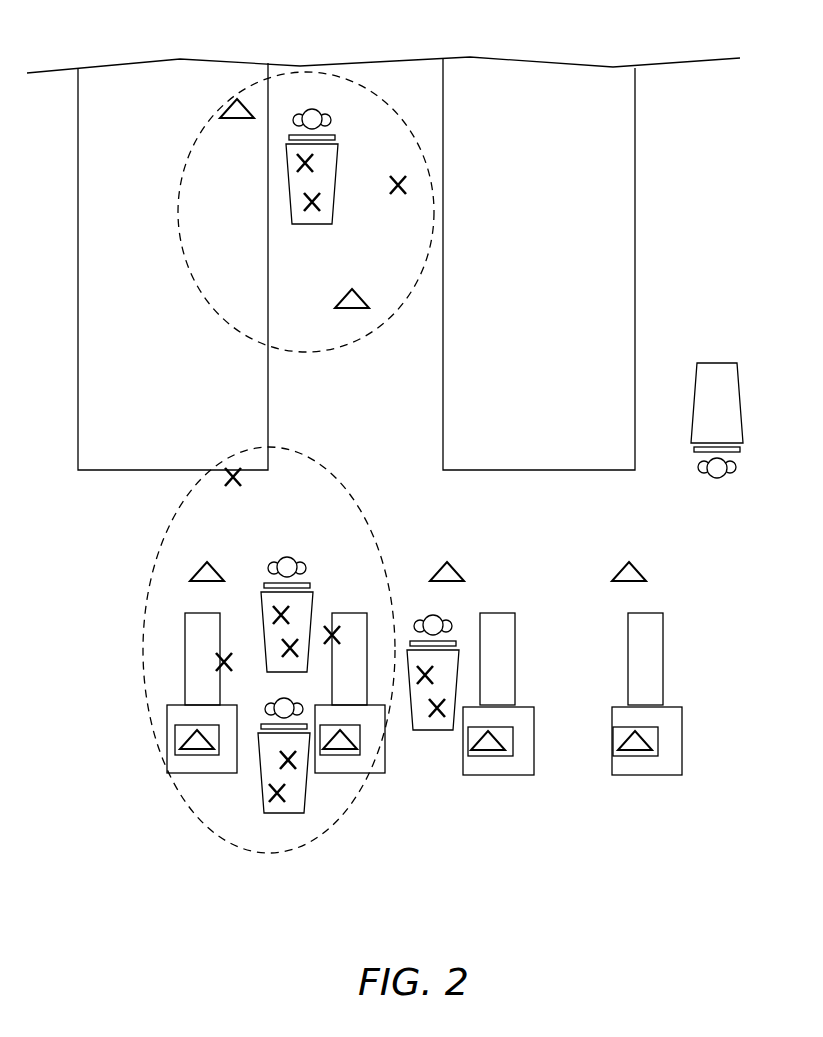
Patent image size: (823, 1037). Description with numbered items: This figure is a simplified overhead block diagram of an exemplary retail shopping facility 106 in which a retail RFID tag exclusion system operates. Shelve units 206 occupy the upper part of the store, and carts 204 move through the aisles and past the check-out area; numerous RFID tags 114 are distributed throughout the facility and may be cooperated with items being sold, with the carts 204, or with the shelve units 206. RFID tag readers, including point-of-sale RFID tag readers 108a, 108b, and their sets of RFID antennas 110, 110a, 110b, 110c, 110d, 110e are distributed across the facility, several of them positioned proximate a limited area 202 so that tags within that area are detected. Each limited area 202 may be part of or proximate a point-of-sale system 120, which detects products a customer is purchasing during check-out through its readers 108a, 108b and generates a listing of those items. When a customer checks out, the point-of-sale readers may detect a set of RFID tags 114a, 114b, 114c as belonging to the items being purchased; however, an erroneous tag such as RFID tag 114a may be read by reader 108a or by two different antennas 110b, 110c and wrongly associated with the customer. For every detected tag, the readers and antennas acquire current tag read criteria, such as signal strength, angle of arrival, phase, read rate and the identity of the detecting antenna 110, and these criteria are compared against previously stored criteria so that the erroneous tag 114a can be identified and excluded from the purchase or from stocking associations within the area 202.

The retail shopping facility 106 is at (637, 900).
The RFID tag reader 108a is at (190, 758).
The RFID tag reader 108b is at (350, 753).
The RFID antenna 110 is at (453, 570).
The RFID antenna 110a is at (190, 748).
The RFID antenna 110b is at (350, 753).
The RFID antenna 110c is at (200, 570).
The RFID antenna 110d is at (226, 112).
The RFID antenna 110e is at (352, 300).
The RFID tag 114 is at (398, 178).
The RFID tag 114a is at (222, 660).
The RFID tag 114b is at (285, 813).
The RFID tag 114c is at (291, 764).
The point-of-sale system 120 is at (170, 715).
The limited area 202 is at (333, 351).
The cart 204 is at (332, 223).
The shelve unit 206 is at (632, 250).